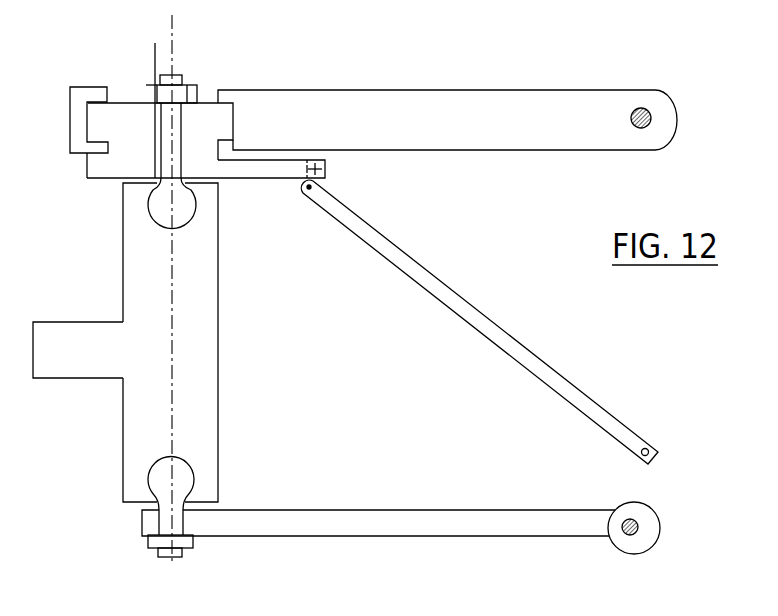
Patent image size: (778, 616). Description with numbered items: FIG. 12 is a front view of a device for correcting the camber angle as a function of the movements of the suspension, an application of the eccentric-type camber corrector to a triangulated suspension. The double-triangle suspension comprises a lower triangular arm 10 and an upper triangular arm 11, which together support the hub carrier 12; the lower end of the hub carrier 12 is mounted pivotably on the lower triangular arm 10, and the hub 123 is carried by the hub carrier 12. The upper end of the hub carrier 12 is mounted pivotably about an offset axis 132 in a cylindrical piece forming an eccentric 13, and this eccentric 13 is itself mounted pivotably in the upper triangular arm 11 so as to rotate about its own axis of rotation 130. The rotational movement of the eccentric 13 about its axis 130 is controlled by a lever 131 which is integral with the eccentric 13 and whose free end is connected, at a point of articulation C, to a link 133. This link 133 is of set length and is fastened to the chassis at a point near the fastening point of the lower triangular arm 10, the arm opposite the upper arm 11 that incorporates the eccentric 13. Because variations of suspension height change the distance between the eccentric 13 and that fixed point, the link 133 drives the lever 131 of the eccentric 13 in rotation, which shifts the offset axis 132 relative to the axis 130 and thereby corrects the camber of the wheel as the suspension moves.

The lower triangular arm 10 is at (410, 518).
The upper triangular arm 11 is at (525, 107).
The hub carrier 12 is at (202, 360).
The eccentric piece 13 is at (125, 162).
The hub 123 is at (72, 320).
The axis of rotation of the eccentric 130 is at (155, 55).
The lever 131 is at (275, 178).
The offset axis 132 is at (175, 33).
The link 133 is at (490, 325).
The pivot point C is at (325, 168).